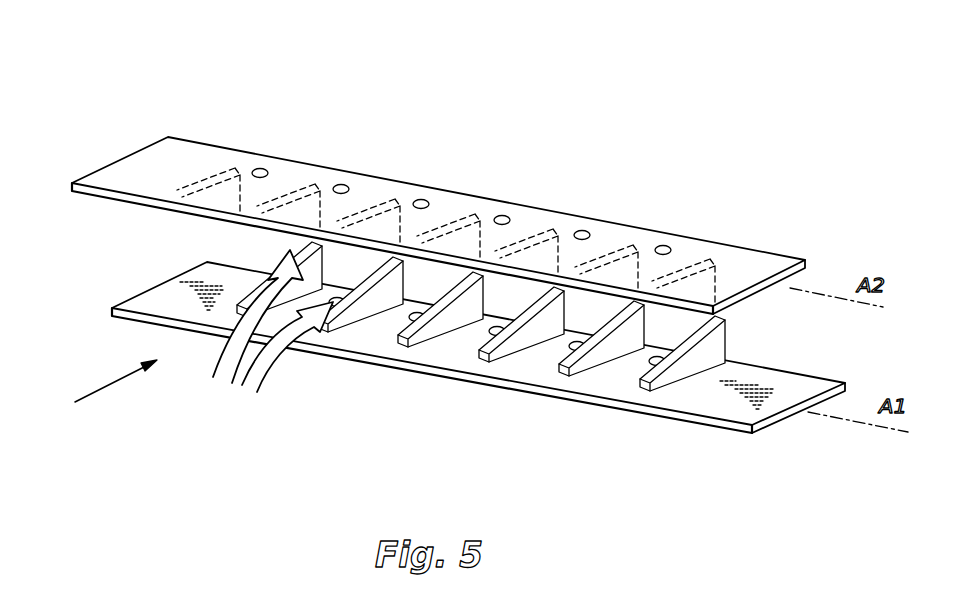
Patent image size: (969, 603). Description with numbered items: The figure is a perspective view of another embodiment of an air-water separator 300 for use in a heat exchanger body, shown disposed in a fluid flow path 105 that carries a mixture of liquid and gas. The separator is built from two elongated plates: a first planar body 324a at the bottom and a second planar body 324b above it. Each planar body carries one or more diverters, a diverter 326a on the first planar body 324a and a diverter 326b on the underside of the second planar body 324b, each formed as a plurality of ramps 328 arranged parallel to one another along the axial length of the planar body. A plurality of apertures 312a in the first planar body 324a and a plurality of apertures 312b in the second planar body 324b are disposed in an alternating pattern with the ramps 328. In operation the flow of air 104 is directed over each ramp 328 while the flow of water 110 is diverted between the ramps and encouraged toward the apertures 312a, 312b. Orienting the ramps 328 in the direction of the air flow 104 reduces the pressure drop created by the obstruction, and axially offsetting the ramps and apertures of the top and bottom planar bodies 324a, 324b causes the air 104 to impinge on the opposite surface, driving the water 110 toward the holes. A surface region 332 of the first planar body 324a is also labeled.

The air-water separator 300 is at (98, 118).
The first planar body 324a is at (788, 388).
The second planar body 324b is at (182, 153).
The apertures of the first planar body 312a is at (414, 318).
The apertures of the second planar body 312b is at (422, 201).
The diverter 326a is at (700, 372).
The diverter 326b is at (538, 255).
The ramp 328 is at (433, 385).
The plate surface region 332 is at (157, 262).
The gas flow path 104 is at (218, 376).
The condensate flow path 110 is at (279, 365).
The fluid flow path 105 is at (100, 382).